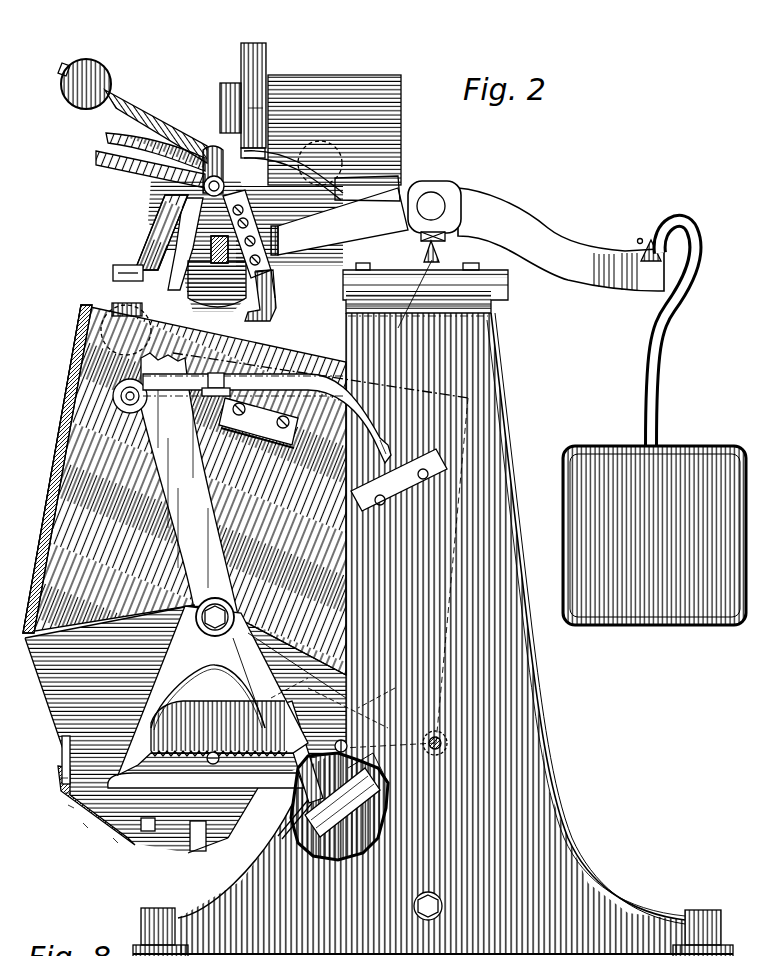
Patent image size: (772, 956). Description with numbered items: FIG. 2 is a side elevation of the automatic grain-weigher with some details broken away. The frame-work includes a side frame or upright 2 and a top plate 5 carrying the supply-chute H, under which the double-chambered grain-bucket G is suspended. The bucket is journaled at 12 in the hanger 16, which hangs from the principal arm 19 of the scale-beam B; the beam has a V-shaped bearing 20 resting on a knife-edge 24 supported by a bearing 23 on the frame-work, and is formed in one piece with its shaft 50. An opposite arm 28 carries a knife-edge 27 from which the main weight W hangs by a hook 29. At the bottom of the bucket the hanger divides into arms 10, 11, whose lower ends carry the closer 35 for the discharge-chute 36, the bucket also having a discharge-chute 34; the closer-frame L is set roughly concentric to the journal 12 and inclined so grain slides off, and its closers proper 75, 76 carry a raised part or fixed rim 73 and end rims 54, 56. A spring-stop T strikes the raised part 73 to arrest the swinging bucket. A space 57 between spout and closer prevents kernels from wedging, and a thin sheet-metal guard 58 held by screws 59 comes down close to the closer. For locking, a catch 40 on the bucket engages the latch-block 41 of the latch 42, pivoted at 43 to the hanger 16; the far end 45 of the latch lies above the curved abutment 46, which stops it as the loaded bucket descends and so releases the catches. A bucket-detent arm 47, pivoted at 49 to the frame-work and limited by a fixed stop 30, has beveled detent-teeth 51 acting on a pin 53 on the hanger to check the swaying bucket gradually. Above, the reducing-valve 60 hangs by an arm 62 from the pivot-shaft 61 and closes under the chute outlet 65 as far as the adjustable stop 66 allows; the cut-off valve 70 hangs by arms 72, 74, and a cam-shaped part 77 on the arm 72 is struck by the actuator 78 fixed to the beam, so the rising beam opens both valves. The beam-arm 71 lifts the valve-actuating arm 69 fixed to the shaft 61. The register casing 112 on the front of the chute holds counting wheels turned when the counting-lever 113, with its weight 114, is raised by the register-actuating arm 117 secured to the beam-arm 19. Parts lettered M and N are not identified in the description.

The side frame or upright 2 is at (537, 653).
The top plate 5 is at (500, 270).
The arm 10 is at (165, 677).
The arm 11 is at (245, 680).
The journal 12 is at (195, 597).
The hanger 16 is at (168, 463).
The principal arm of the scale-beam 19 is at (339, 215).
The V-shaped bearing 20 is at (455, 222).
The bearing 23 is at (408, 301).
The pivot or knife-edge 24 is at (431, 242).
The pivot or knife-edge 27 is at (633, 235).
The arm 28 is at (560, 248).
The hook 29 is at (680, 225).
The fixed stop 30 is at (339, 740).
The discharge-chute 34 is at (75, 815).
The closer 35 is at (380, 795).
The discharge-chute 36 is at (222, 833).
The catch 40 is at (262, 425).
The detent-catch or latch-block 41 is at (200, 383).
The latch 42 is at (267, 410).
The pivot 43 is at (115, 393).
The end of the latch 45 is at (372, 425).
The curved abutment 46 is at (375, 465).
The bucket-detent 47 is at (265, 700).
The pivot 49 is at (435, 730).
The shaft 50 is at (430, 185).
The detent-teeth 51 is at (160, 740).
The detent face or pin 53 is at (199, 750).
The rim 54 is at (57, 785).
The rim 56 is at (300, 845).
The space 57 is at (60, 797).
The sheet-metal guard 58 is at (140, 823).
The screws 59 is at (206, 828).
The reducing-valve 60 is at (180, 305).
The pivot-shaft 61 is at (197, 140).
The arm 62 is at (137, 230).
The outlet 65 is at (222, 318).
The adjustable stop 66 is at (105, 260).
The valve-actuating arm 69 is at (100, 128).
The cut-off valve 70 is at (255, 312).
The beam-arm 71 is at (90, 156).
The arm 72 is at (263, 272).
The raised part or fixed rim 73 is at (52, 770).
The arm 74 is at (267, 288).
The closer proper 75 is at (105, 830).
The closer proper 76 is at (372, 778).
The cam-shaped part 77 is at (263, 248).
The cam or valve actuator 78 is at (215, 305).
The box-shaped frame or casing 112 is at (215, 80).
The counting-lever 113 is at (243, 36).
The weight 114 is at (255, 100).
The register-actuating arm 117 is at (273, 174).
The scale-beam B is at (500, 192).
The grain-bucket G is at (62, 375).
The supply-chute H is at (312, 70).
The plate or closer-frame L is at (65, 810).
The block M is at (125, 302).
The handle N is at (132, 98).
The spring-stop T is at (58, 750).
The main weight W is at (660, 617).